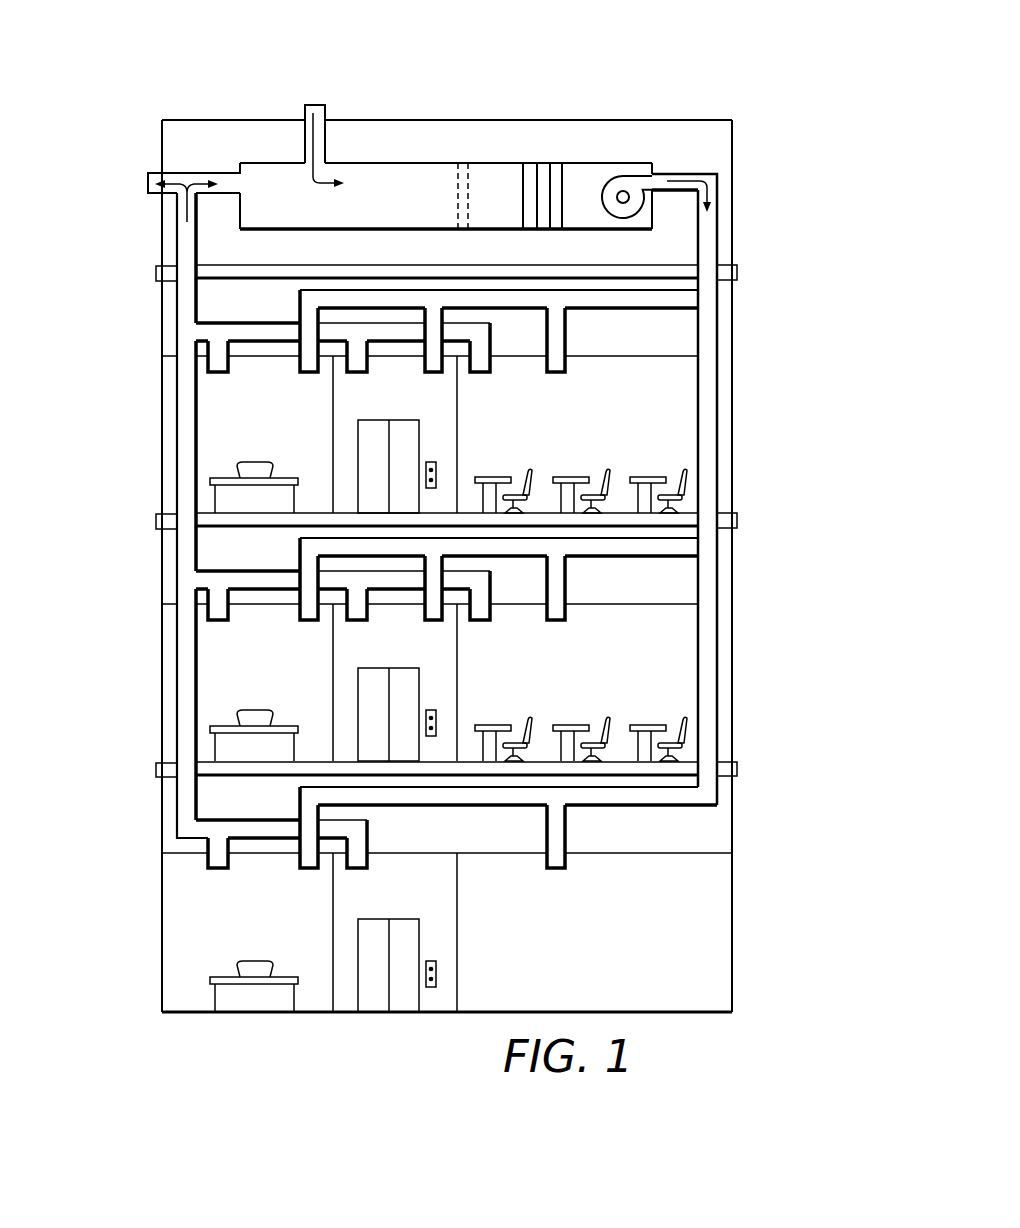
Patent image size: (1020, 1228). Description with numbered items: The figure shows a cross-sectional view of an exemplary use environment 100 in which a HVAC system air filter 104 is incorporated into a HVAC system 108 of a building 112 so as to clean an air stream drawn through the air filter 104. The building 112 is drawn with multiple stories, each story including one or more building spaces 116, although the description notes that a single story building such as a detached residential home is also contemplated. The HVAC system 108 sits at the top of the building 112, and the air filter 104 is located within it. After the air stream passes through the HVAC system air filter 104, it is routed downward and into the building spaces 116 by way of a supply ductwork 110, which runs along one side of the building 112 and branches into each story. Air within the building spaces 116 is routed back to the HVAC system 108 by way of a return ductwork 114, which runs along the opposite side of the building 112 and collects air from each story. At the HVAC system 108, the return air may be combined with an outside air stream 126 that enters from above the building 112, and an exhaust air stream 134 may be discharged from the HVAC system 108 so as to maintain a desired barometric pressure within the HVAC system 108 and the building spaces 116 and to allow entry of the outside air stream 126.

The use environment 100 is at (218, 67).
The HVAC system air filter 104 is at (466, 163).
The HVAC system 108 is at (588, 163).
The supply ductwork 110 is at (707, 643).
The building 112 is at (732, 212).
The return ductwork 114 is at (185, 427).
The building spaces 116 is at (678, 408).
The outside air stream 126 is at (320, 105).
The exhaust air stream 134 is at (148, 185).